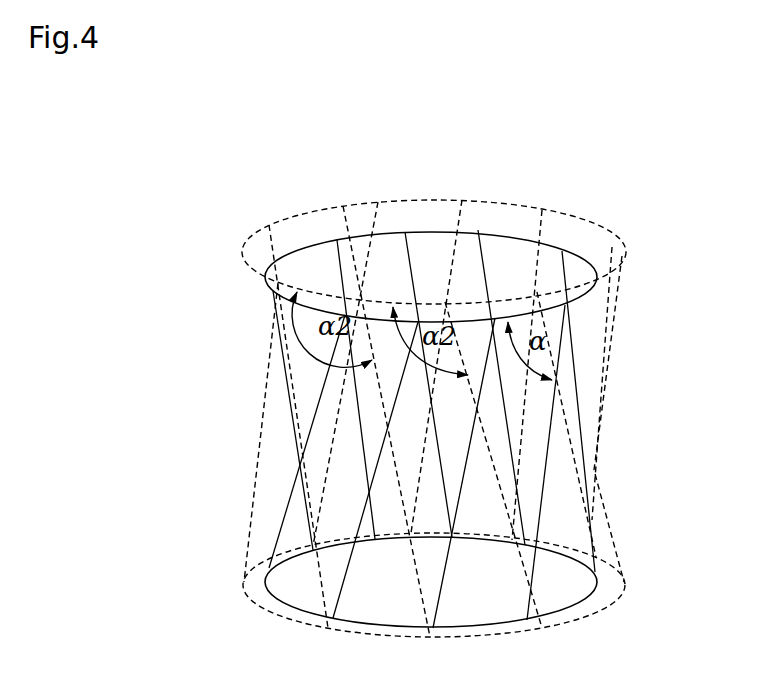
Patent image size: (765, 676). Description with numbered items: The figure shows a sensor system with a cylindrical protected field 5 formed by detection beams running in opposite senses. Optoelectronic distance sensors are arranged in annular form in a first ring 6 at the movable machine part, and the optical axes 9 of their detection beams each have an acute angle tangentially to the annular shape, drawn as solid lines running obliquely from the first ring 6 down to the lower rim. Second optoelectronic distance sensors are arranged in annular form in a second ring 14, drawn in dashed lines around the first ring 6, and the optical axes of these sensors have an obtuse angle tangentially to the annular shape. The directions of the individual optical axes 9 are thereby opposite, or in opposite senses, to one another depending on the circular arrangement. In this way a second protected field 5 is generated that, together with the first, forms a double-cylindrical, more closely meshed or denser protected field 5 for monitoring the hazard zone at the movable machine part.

The second ring 14 is at (530, 205).
The first ring 6 is at (557, 244).
The protected field 5 is at (586, 330).
The optical axes 9 is at (254, 495).